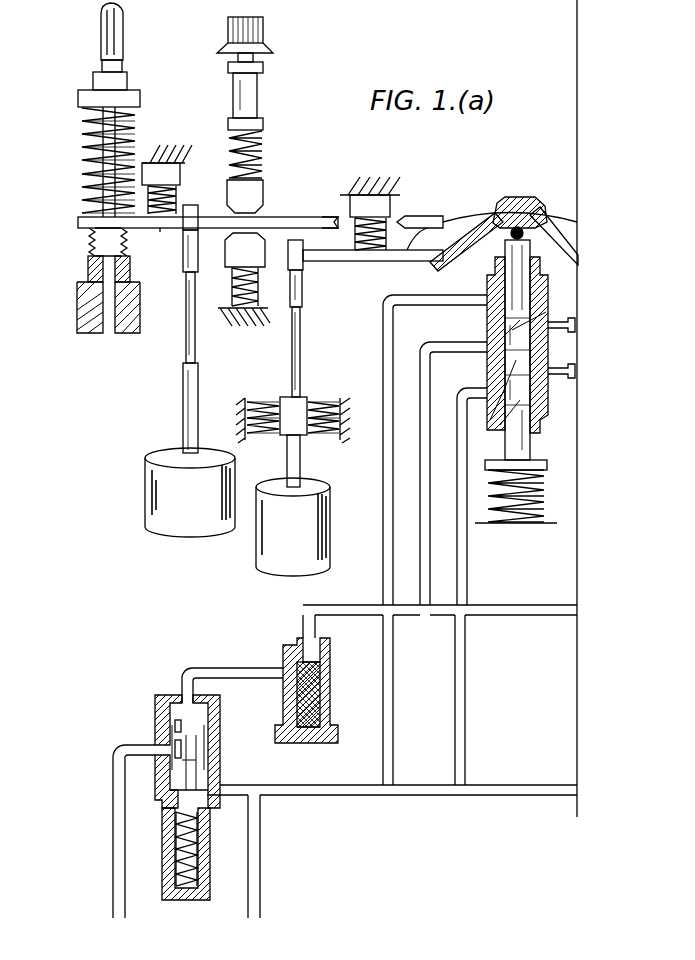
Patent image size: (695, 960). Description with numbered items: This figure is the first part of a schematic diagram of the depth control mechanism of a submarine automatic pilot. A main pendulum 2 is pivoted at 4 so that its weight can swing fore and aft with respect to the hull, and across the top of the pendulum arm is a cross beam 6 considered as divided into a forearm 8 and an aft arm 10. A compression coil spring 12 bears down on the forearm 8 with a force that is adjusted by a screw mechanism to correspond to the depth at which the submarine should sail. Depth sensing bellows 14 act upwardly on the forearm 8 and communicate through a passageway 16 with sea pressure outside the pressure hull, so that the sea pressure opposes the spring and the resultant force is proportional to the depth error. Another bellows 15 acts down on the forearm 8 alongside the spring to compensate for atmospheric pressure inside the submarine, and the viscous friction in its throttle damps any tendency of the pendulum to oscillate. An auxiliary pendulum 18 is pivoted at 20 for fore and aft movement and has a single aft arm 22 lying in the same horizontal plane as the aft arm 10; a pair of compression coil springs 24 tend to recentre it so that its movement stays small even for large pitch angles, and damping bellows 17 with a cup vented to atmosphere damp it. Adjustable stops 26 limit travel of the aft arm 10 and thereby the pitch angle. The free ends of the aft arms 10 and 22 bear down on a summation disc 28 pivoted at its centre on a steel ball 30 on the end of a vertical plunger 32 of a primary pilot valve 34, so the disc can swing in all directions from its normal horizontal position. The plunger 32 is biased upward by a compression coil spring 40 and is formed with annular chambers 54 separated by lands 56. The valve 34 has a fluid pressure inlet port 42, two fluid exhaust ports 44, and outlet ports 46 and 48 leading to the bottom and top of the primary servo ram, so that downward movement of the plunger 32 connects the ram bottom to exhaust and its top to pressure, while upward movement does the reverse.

The main pendulum 2 is at (186, 336).
The pivot 4 is at (198, 210).
The cross beam 6 is at (272, 216).
The forearm 8 is at (160, 228).
The aft arm 10 is at (330, 216).
The compression coil spring 12 is at (130, 128).
The depth sensing bellows 14 is at (125, 252).
The compensating bellows 15 is at (176, 186).
The passageway 16 is at (128, 300).
The damping bellows 17 is at (388, 218).
The auxiliary pendulum 18 is at (301, 322).
The pivot 20 is at (300, 262).
The aft arm 22 is at (350, 256).
The compression coil springs 24 is at (330, 394).
The stops 26 is at (238, 253).
The summation disc 28 is at (468, 218).
The steel ball 30 is at (520, 230).
The plunger 32 is at (500, 280).
The primary pilot valve 34 is at (535, 418).
The compression coil spring 40 is at (530, 519).
The fluid pressure inlet port 42 is at (460, 352).
The fluid exhaust ports 44 is at (462, 306).
The outlet port 46 is at (555, 328).
The outlet port 48 is at (553, 374).
The annular chambers 54 is at (546, 312).
The lands 56 is at (490, 420).